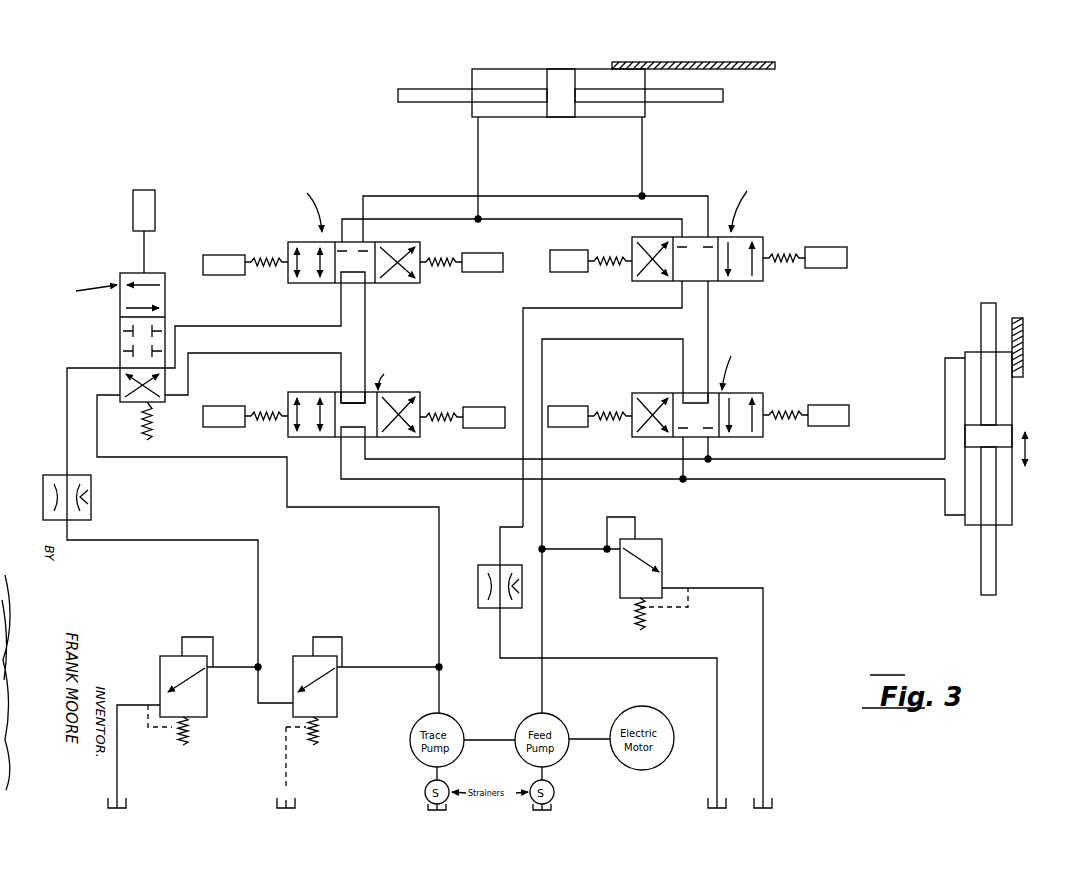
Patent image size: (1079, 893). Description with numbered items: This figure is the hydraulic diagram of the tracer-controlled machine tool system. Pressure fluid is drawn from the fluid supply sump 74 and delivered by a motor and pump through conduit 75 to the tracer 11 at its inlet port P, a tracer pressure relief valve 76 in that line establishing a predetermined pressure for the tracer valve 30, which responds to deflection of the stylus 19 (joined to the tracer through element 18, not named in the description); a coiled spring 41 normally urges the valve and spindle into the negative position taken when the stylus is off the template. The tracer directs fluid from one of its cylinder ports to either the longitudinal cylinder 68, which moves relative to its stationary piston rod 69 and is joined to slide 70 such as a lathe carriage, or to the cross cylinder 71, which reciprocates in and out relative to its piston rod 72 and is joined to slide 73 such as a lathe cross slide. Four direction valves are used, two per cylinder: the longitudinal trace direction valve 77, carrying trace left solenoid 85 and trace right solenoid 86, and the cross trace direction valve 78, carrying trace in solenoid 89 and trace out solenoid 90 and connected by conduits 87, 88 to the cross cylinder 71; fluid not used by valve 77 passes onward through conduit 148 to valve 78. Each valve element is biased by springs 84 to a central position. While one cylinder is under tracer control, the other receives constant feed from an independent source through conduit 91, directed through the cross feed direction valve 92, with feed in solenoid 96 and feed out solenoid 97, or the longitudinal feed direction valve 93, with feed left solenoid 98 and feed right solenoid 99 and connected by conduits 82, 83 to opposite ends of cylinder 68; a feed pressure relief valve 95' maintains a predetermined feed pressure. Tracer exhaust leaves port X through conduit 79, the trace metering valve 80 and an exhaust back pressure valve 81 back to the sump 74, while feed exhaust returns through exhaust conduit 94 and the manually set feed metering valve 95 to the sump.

The tracer 11 is at (180, 344).
The tracer stylus connection 18 is at (145, 257).
The stylus 19 is at (156, 207).
The tracer valve 30 is at (118, 302).
The coiled spring 41 is at (155, 436).
The longitudinal cylinder 68 is at (468, 75).
The piston rod 69 is at (407, 92).
The slide 70 is at (752, 62).
The cross cylinder 71 is at (1015, 513).
The piston rod 72 is at (998, 566).
The slide 73 is at (1024, 336).
The fluid supply sump 74 is at (128, 805).
The conduit 75 is at (434, 690).
The tracer pressure relief valve 76 is at (338, 691).
The longitudinal trace direction valve 77 is at (324, 285).
The cross trace direction valve 78 is at (328, 391).
The conduit 79 is at (65, 437).
The trace metering valve 80 is at (50, 521).
The exhaust back pressure valve 81 is at (158, 669).
The conduit 82 is at (477, 160).
The conduit 83 is at (638, 160).
The springs 84 is at (276, 255).
The trace left solenoid 85 is at (240, 275).
The trace right solenoid 86 is at (487, 272).
The conduit 87 is at (938, 462).
The conduit 88 is at (924, 482).
The trace in solenoid 89 is at (213, 427).
The trace out solenoid 90 is at (495, 428).
The conduit 91 is at (547, 690).
The cross feed direction valve 92 is at (681, 393).
The longitudinal feed direction valve 93 is at (640, 282).
The exhaust conduit 94 is at (524, 323).
The feed metering valve 95 is at (587, 657).
The feed pressure relief valve 95' is at (652, 649).
The feed in solenoid 96 is at (583, 427).
The feed out solenoid 97 is at (850, 427).
The feed left solenoid 98 is at (574, 273).
The feed right solenoid 99 is at (848, 259).
The conduit 148 is at (366, 317).